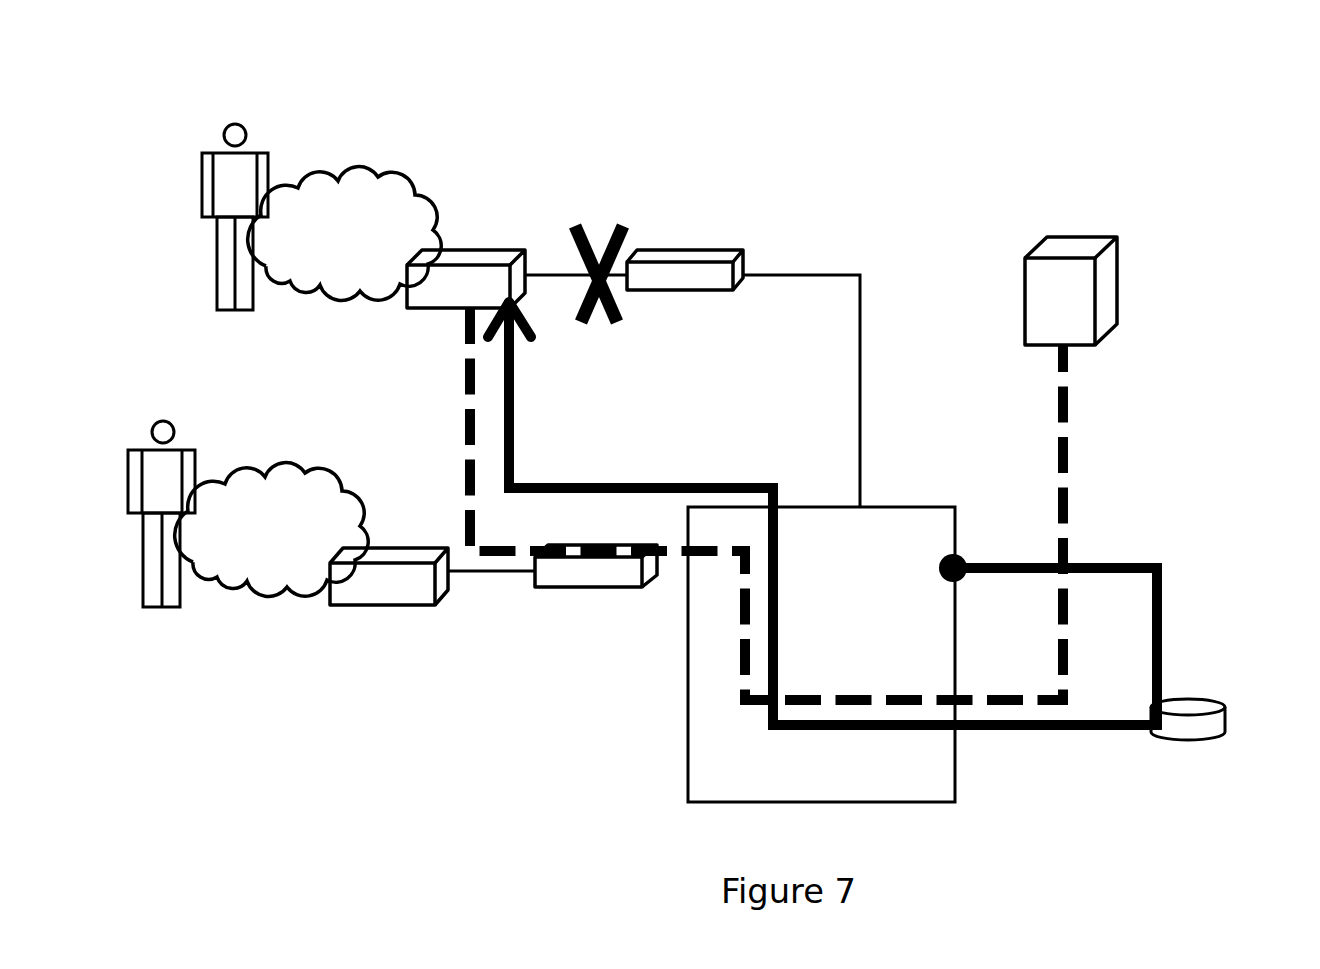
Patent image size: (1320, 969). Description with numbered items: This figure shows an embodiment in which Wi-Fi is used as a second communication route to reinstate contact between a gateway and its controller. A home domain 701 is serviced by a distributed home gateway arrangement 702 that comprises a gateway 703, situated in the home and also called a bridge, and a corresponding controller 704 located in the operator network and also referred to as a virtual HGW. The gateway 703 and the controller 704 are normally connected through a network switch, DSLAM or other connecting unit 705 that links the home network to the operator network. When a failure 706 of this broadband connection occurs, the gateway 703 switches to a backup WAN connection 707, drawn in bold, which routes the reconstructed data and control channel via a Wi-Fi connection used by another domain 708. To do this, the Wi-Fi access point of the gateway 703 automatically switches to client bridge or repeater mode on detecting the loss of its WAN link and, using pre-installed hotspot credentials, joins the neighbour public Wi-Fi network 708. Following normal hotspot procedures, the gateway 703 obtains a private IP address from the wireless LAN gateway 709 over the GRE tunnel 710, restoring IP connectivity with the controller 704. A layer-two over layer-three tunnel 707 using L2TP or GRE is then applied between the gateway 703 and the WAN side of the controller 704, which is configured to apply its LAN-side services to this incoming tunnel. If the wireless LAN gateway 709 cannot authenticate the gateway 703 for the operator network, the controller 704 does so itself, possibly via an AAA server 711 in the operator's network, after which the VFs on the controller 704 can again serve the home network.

The home domain 701 is at (345, 175).
The distributed home gateway arrangement 702 is at (500, 250).
The gateway 703 is at (435, 218).
The controller 704 is at (686, 654).
The connecting unit 705 is at (693, 250).
The failure 706 is at (625, 230).
The backup WAN connection 707 is at (1052, 730).
The neighbour public Wi-Fi network 708 is at (272, 588).
The wireless LAN gateway 709 is at (1082, 235).
The GRE tunnel 710 is at (1070, 423).
The AAA server 711 is at (1188, 702).